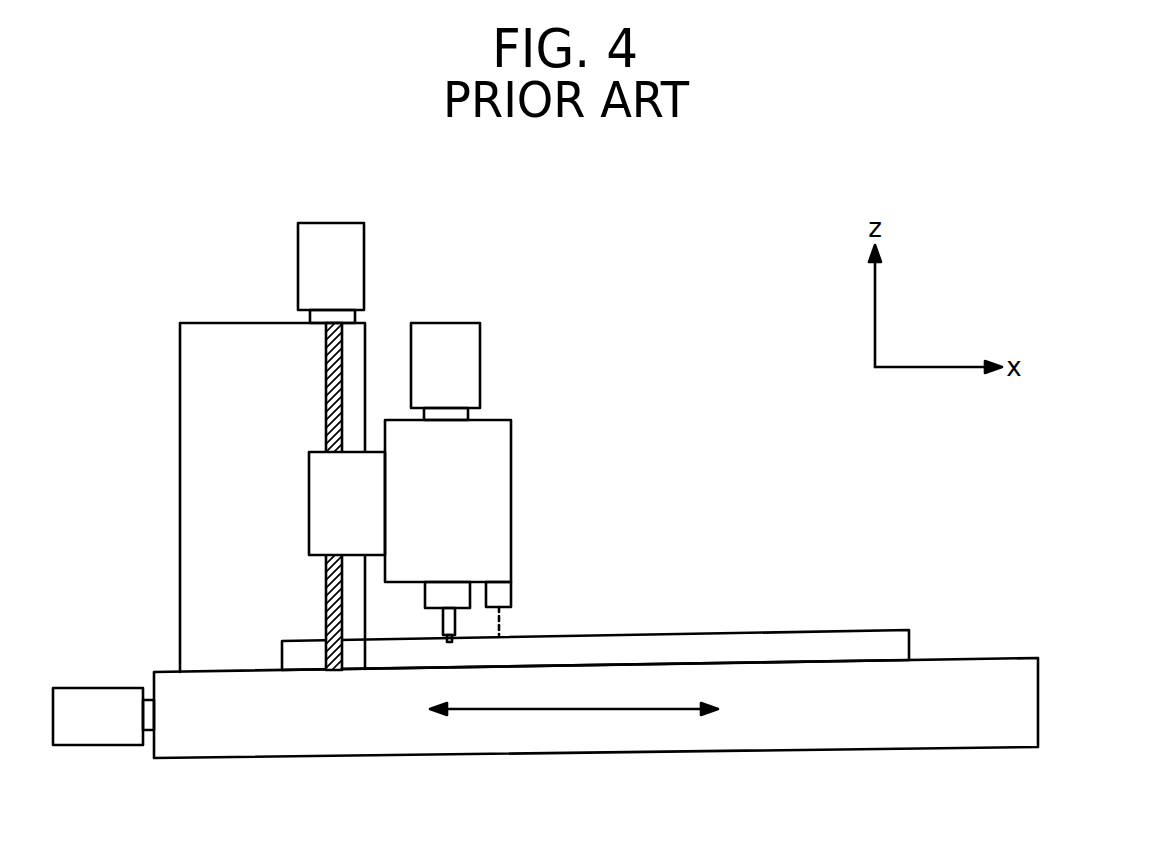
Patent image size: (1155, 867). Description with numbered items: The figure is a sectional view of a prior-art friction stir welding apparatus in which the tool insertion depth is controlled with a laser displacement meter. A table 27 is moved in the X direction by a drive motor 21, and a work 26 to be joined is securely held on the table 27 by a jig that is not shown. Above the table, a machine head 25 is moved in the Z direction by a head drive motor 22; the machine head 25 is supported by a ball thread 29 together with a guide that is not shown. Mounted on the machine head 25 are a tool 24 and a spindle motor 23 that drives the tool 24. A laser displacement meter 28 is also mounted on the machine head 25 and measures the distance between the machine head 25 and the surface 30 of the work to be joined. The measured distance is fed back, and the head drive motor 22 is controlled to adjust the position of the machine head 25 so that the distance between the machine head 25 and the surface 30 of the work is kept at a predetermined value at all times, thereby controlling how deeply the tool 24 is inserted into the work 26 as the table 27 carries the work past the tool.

The drive motor 21 is at (98, 730).
The head drive motor 22 is at (318, 267).
The spindle motor 23 is at (462, 365).
The tool 24 is at (450, 624).
The machine head 25 is at (493, 500).
The work 26 is at (838, 647).
The table 27 is at (1015, 703).
The laser displacement meter 28 is at (497, 593).
The ball thread 29 is at (327, 390).
The surface of the work 30 is at (763, 633).